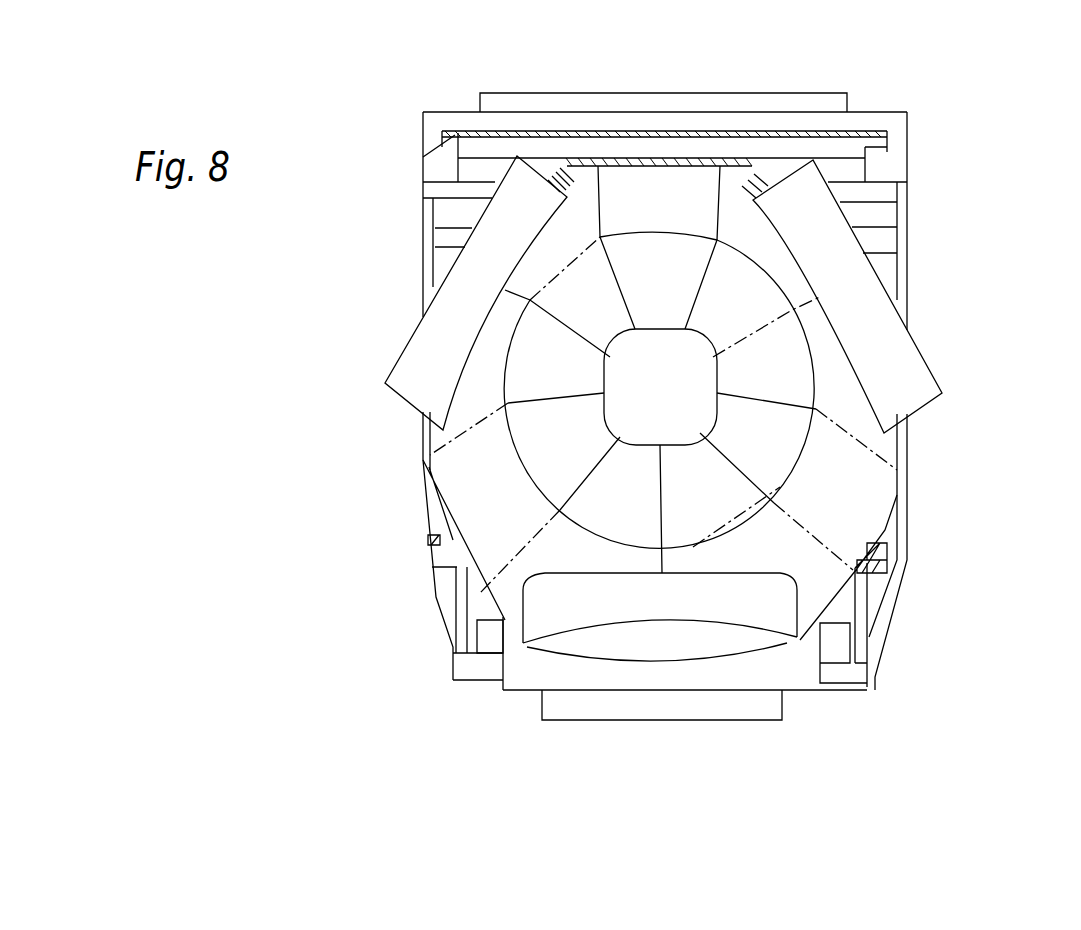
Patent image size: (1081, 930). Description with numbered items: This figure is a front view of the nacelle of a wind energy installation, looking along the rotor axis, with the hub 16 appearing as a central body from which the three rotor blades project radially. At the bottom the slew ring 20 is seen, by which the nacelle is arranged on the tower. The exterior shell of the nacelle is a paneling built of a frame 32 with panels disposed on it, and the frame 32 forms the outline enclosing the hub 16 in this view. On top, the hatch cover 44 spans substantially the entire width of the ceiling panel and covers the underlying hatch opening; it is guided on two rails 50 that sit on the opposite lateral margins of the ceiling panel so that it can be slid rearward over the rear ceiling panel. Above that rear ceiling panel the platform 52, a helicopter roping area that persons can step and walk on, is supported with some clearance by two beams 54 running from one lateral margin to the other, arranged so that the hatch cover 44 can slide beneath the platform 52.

The hub 16 is at (896, 482).
The slew ring 20 is at (680, 720).
The frame 32 is at (907, 270).
The hatch cover 44 is at (843, 138).
The rails 50 is at (423, 155).
The platform 52 is at (742, 93).
The beams 54 is at (907, 116).